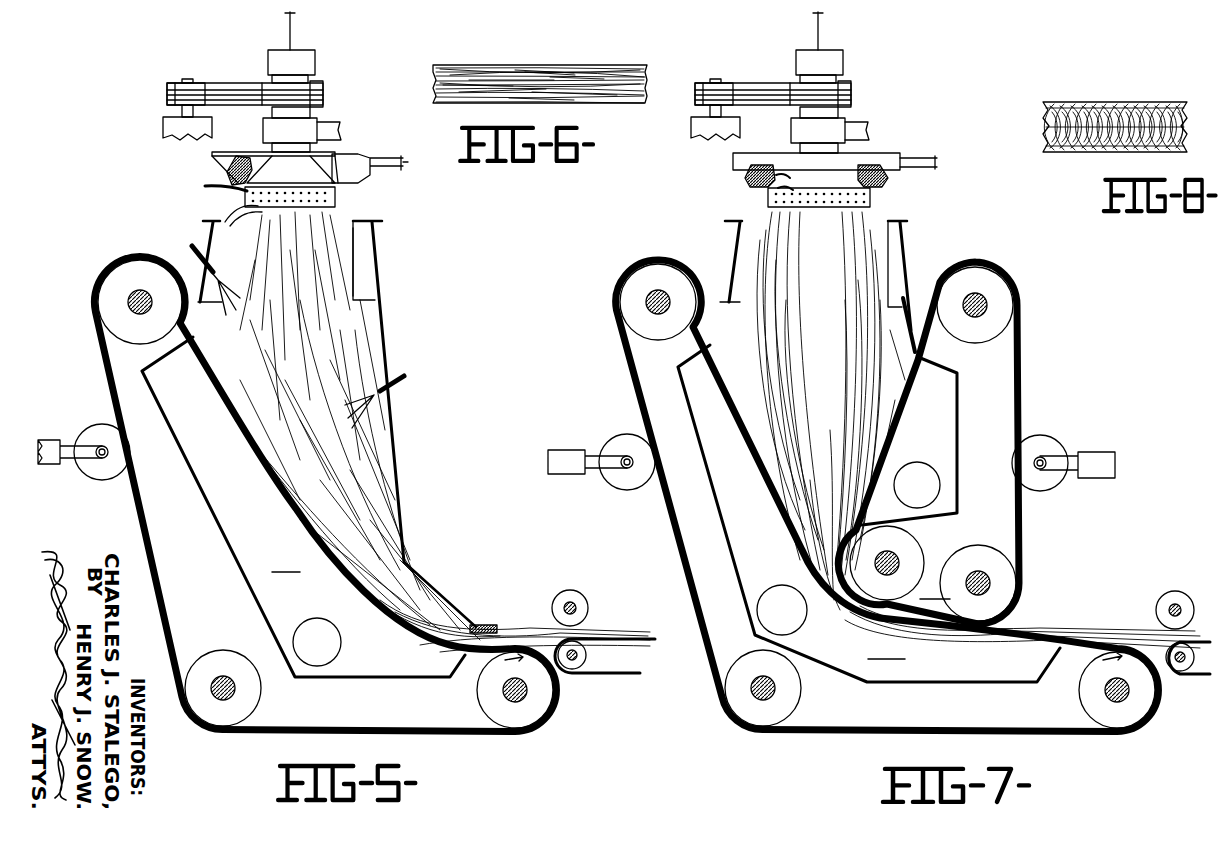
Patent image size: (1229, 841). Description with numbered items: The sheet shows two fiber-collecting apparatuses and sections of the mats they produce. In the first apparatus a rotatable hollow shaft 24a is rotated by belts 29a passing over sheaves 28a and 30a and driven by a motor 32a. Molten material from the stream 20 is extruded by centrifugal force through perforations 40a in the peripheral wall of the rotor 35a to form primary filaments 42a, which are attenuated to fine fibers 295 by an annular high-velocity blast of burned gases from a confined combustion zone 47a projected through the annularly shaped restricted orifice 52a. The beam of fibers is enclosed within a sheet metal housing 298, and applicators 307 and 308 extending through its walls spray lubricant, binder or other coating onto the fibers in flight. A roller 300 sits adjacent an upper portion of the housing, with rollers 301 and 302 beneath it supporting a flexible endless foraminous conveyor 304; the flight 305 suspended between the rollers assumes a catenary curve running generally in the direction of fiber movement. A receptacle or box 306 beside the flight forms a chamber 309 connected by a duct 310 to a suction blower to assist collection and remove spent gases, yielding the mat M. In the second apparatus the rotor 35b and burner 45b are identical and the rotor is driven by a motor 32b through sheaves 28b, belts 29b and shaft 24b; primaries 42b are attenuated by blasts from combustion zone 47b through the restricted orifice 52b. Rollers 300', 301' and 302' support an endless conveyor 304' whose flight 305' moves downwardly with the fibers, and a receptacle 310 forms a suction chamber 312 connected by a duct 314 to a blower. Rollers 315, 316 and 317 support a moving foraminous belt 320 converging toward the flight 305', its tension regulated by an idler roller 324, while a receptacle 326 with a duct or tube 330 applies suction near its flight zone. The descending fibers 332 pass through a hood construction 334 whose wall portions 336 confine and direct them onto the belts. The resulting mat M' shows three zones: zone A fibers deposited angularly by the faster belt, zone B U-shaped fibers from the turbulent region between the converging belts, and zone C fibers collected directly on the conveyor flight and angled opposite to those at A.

In FIG. 5, the stream 20 is at (298, 23).
In FIG. 7, the stream 20 is at (841, 27).
In FIG. 5, the sheave 28a is at (318, 82).
In FIG. 5, the belts 29a is at (257, 62).
In FIG. 5, the sheave 30a is at (170, 85).
In FIG. 5, the motor 32a is at (165, 126).
In FIG. 5, the rotatable hollow shaft 24a is at (318, 113).
In FIG. 5, the confined combustion zone 47a is at (245, 147).
In FIG. 5, the annularly shaped restricted orifice 52a is at (351, 160).
In FIG. 5, the primary filaments 42a is at (208, 187).
In FIG. 5, the perforations 40a is at (228, 218).
In FIG. 5, the rotor 35a is at (302, 208).
In FIG. 5, the housing 298 is at (205, 236).
In FIG. 5, the fine fibers 295 is at (352, 246).
In FIG. 5, the applicator 307 is at (190, 248).
In FIG. 5, the applicator 308 is at (400, 385).
In FIG. 5, the roller 300 is at (115, 293).
In FIG. 5, the roller 301 is at (223, 707).
In FIG. 5, the roller 302 is at (530, 707).
In FIG. 5, the flexible endless conveyor 304 is at (325, 509).
In FIG. 5, the flight 305 is at (257, 495).
In FIG. 5, the receptacle or box 306 is at (350, 676).
In FIG. 5, the chamber 309 is at (289, 561).
In FIG. 5, the duct 310 is at (322, 642).
In FIG. 7, the duct 310 is at (836, 672).
In FIG. 5, the mat M is at (603, 631).
In FIG. 6, the mat M is at (540, 62).
In FIG. 7, the block 28b is at (848, 64).
In FIG. 7, the arm 29b is at (773, 77).
In FIG. 7, the motor 32b is at (688, 134).
In FIG. 7, the housing 24b is at (845, 119).
In FIG. 7, the burner 45b is at (835, 143).
In FIG. 7, the valve 47b is at (778, 173).
In FIG. 7, the restricted orifice 52b is at (734, 189).
In FIG. 7, the primaries 42b is at (732, 208).
In FIG. 7, the rotor 35b is at (819, 218).
In FIG. 7, the hood construction 334 is at (910, 240).
In FIG. 7, the wall portions 336 is at (908, 305).
In FIG. 7, the roller 300' is at (637, 297).
In FIG. 7, the roller 301' is at (763, 708).
In FIG. 7, the roller 302' is at (1117, 711).
In FIG. 7, the conveyor 304' is at (887, 523).
In FIG. 7, the flight or zone 305' is at (752, 508).
In FIG. 7, the duct 314 is at (798, 618).
In FIG. 7, the suction chamber 312 is at (911, 618).
In FIG. 7, the roller 317 is at (995, 278).
In FIG. 7, the foraminous belt or conveyor 320 is at (1022, 343).
In FIG. 7, the roller 315 is at (898, 545).
In FIG. 7, the roller 316 is at (995, 553).
In FIG. 7, the duct or tube 330 is at (928, 472).
In FIG. 7, the receptacle 326 is at (960, 410).
In FIG. 7, the idler roller 324 is at (1055, 452).
In FIG. 7, the fiber stream 332 is at (900, 366).
In FIG. 8, the zone A is at (1135, 106).
In FIG. 7, the zone A is at (895, 398).
In FIG. 8, the zone B is at (1047, 126).
In FIG. 7, the zone B is at (802, 535).
In FIG. 8, the zone C is at (1086, 152).
In FIG. 7, the zone C is at (755, 445).
In FIG. 8, the mat M' is at (1126, 106).
In FIG. 7, the mat M' is at (1183, 620).